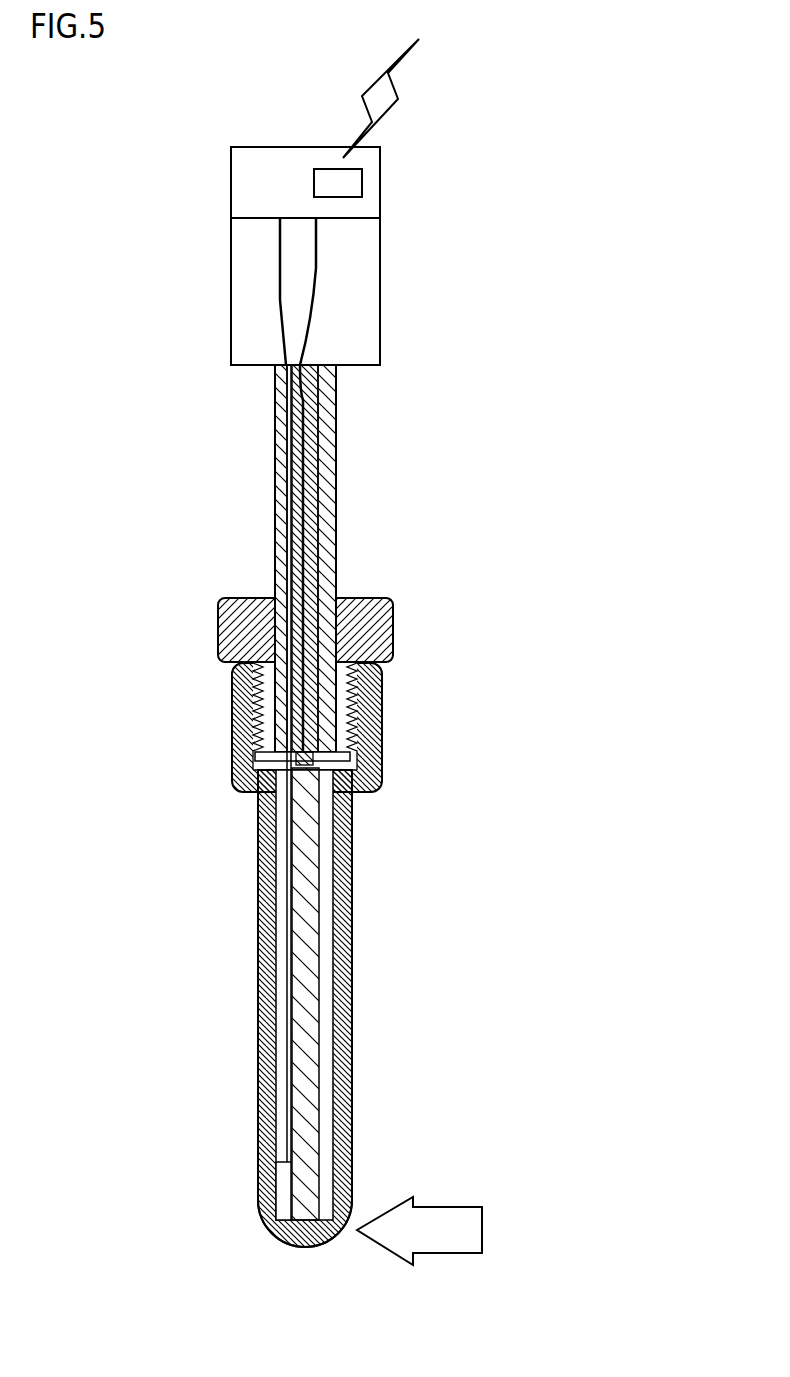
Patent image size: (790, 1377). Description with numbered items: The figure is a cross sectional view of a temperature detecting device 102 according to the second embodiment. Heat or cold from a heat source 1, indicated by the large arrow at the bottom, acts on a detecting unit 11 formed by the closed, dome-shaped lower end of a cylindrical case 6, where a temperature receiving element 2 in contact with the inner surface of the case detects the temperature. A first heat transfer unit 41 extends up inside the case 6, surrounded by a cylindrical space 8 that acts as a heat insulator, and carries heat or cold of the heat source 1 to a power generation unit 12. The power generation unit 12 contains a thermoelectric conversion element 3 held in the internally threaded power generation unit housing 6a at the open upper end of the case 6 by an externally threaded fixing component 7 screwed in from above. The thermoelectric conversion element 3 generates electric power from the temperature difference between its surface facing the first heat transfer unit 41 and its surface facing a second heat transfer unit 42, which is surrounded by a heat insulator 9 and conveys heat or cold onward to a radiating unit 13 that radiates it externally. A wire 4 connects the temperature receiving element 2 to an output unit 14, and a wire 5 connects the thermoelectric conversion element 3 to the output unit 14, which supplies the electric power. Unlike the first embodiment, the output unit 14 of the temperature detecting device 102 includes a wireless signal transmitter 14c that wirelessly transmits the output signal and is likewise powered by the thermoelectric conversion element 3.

The heat source 1 is at (455, 1207).
The temperature receiving element 2 is at (270, 1190).
The thermoelectric conversion element 3 is at (252, 757).
The wire 4 is at (280, 296).
The wire 5 is at (318, 280).
The case 6 is at (306, 1008).
The power generation unit housing 6a is at (232, 720).
The fixing component 7 is at (228, 628).
The cylindrical space 8 is at (328, 1035).
The heat insulator 9 is at (281, 500).
The detecting unit 11 is at (262, 1215).
The power generation unit 12 is at (314, 695).
The radiating unit 13 is at (231, 263).
The output unit 14 is at (316, 182).
The wireless signal transmitter 14c is at (362, 185).
The first heat transfer unit 41 is at (308, 945).
The second heat transfer unit 42 is at (308, 483).
The temperature detecting device 102 is at (432, 132).